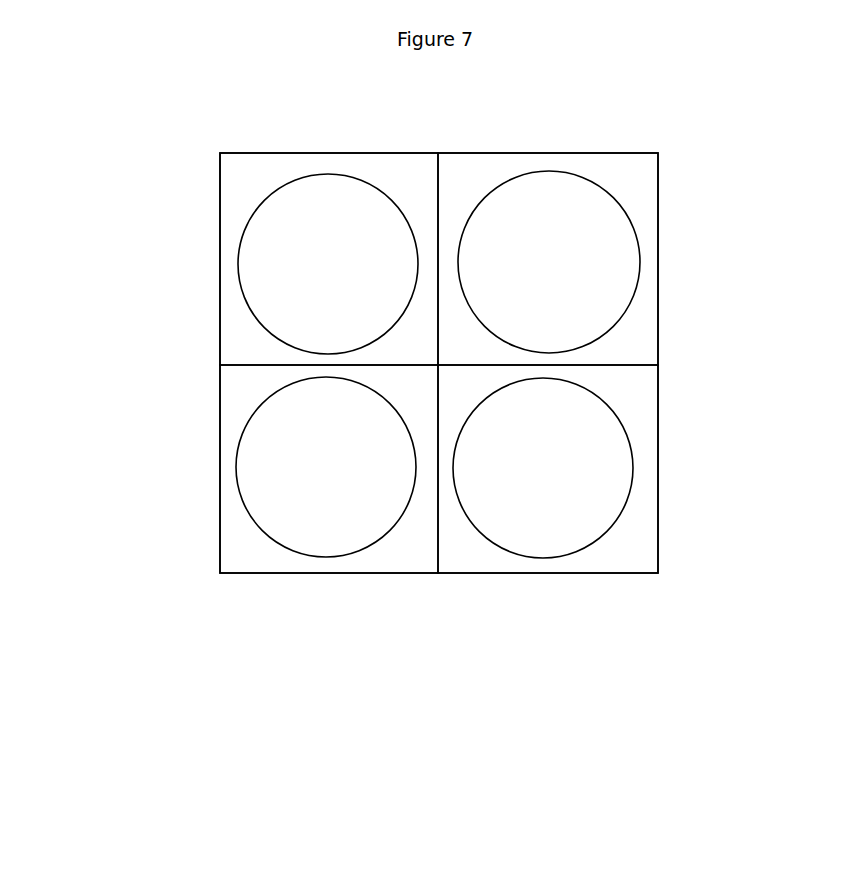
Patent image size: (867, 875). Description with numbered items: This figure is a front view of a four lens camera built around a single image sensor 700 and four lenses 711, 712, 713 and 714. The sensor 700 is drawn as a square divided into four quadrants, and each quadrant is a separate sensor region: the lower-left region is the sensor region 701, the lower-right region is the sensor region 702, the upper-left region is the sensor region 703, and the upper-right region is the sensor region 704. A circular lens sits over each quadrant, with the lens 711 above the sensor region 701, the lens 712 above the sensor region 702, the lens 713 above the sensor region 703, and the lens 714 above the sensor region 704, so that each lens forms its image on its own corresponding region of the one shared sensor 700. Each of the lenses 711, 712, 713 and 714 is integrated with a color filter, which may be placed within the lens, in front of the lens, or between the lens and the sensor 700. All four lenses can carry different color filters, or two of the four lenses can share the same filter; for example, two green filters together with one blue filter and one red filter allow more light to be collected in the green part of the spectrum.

The sensor 700 is at (218, 495).
The sensor region 701 is at (418, 553).
The sensor region 702 is at (637, 555).
The sensor region 703 is at (262, 171).
The sensor region 704 is at (482, 172).
The lens 711 is at (285, 435).
The lens 712 is at (575, 462).
The lens 713 is at (300, 253).
The lens 714 is at (593, 277).